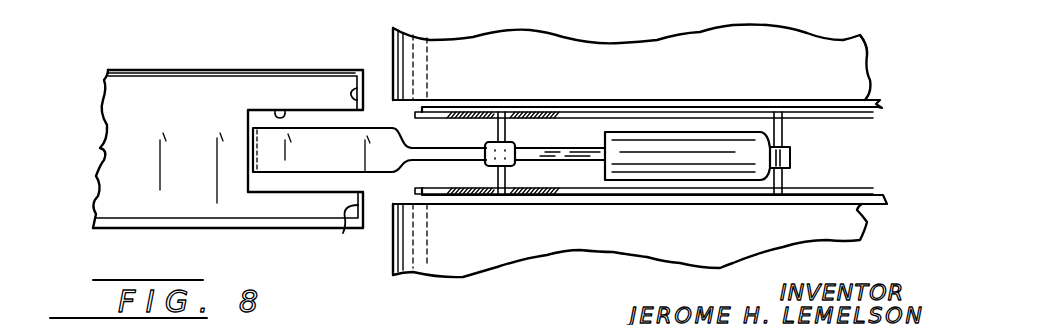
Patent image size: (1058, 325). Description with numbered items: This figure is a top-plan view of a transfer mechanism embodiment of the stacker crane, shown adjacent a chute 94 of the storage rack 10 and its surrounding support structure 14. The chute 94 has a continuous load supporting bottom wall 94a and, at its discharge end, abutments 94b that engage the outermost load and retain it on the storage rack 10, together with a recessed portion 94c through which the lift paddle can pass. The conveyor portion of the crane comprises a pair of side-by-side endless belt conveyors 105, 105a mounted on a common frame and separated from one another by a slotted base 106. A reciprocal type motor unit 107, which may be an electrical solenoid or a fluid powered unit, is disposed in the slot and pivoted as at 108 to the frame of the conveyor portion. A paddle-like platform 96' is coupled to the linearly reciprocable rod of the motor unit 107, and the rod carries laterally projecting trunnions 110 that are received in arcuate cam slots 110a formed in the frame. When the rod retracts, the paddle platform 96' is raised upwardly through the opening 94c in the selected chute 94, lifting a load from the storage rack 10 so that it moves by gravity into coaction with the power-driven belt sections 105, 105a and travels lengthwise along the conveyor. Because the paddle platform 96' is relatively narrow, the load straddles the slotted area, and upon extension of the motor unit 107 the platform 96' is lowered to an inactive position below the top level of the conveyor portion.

The storage rack 10 is at (127, 69).
The support structure 14 is at (836, 62).
The chute 94 is at (100, 148).
The load supporting bottom wall 94a is at (182, 98).
The abutments 94b is at (355, 83).
The recessed portion 94c is at (281, 111).
The paddle-like platform 96' is at (369, 101).
The endless belt conveyor 105 is at (748, 63).
The endless belt conveyor 105a is at (750, 232).
The slotted base 106 is at (843, 115).
The reciprocal type motor unit 107 is at (635, 143).
The pivot 108 is at (783, 183).
The trunnions 110 is at (503, 112).
The arcuate cam slots 110a is at (543, 195).